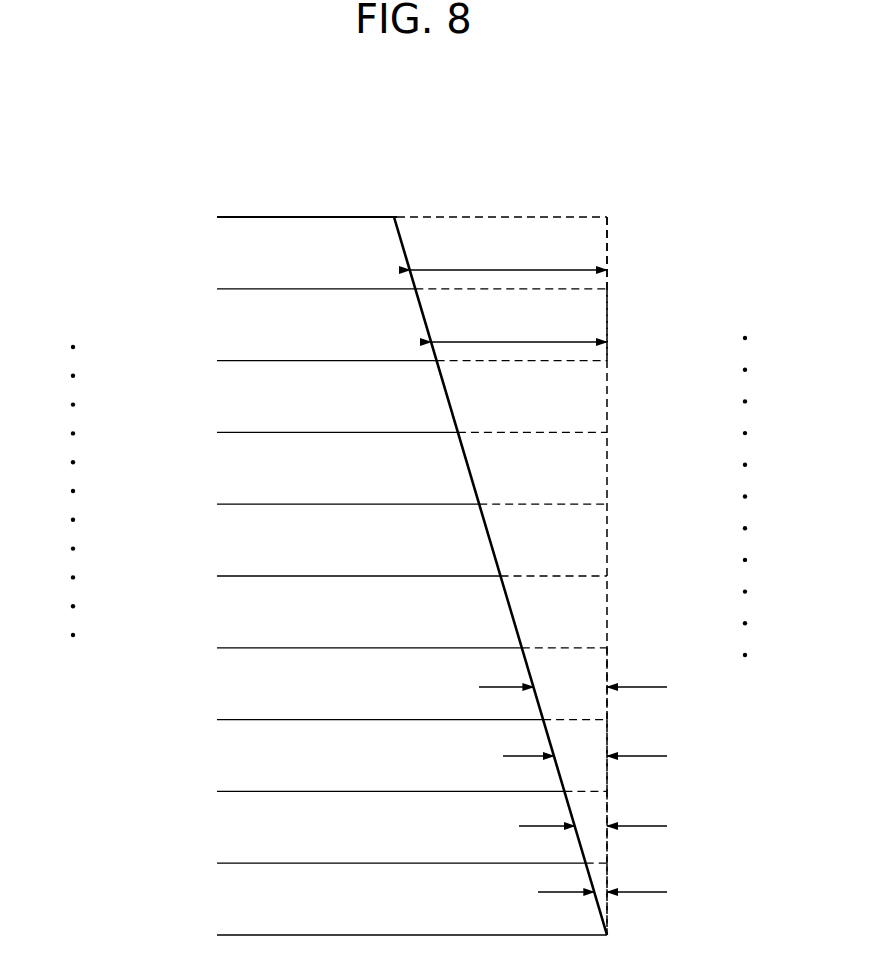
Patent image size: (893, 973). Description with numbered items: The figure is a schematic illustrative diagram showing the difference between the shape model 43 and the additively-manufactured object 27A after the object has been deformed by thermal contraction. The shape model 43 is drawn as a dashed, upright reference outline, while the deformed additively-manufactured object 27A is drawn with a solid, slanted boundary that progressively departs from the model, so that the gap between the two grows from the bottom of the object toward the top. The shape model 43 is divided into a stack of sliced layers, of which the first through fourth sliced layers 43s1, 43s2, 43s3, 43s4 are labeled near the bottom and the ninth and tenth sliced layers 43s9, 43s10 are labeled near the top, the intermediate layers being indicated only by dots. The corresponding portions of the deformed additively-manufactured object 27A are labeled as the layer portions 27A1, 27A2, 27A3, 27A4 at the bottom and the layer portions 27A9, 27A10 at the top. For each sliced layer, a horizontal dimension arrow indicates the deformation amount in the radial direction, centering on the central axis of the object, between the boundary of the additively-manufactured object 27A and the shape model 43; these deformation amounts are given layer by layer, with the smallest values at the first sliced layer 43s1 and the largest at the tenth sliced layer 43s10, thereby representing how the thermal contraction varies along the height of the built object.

The additively-manufactured object 27A is at (302, 210).
The shape model 43 is at (558, 208).
The tenth segment of surface 27A 27A10 is at (242, 256).
The ninth segment of surface 27A 27A9 is at (242, 326).
The fourth segment of surface 27A 27A4 is at (242, 683).
The third segment of surface 27A 27A3 is at (242, 760).
The second segment of surface 27A 27A2 is at (242, 822).
The first segment of surface 27A 27A1 is at (242, 902).
The sliced layer 43s10 is at (607, 243).
The sliced layer 43s9 is at (607, 325).
The sliced layer 43s4 is at (607, 700).
The sliced layer 43s3 is at (607, 771).
The sliced layer 43s2 is at (607, 848).
The sliced layer 43s1 is at (607, 907).